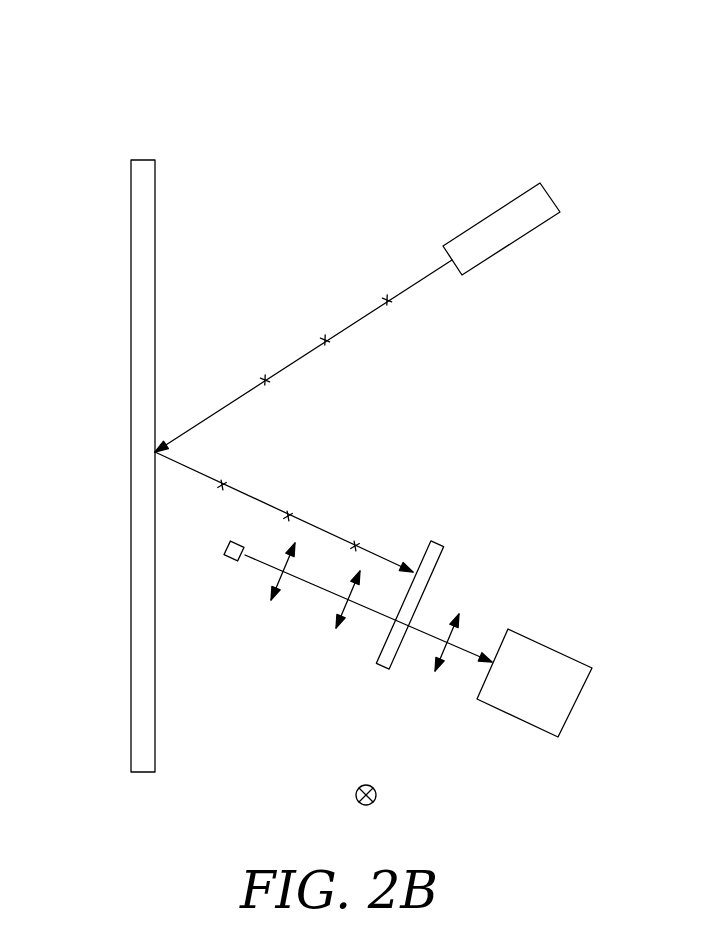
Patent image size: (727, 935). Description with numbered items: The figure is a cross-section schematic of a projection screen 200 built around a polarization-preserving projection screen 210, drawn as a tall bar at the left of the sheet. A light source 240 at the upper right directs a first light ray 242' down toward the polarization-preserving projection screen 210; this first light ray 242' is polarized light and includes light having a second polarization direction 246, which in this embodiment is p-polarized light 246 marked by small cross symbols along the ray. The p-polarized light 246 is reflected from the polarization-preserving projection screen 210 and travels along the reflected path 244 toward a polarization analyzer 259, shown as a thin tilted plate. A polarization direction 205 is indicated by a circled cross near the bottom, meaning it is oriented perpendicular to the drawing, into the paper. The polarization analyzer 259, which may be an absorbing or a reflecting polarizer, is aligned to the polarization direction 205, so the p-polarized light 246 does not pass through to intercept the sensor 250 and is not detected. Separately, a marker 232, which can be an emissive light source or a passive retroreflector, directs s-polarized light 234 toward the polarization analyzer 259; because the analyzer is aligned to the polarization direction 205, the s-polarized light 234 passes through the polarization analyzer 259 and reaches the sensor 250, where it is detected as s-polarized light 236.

The projection screen 200 is at (160, 58).
The polarization direction 205 is at (355, 793).
The polarization-preserving projection screen 210 is at (143, 160).
The marker 232 is at (228, 562).
The s-polarized light 234 is at (283, 582).
The s-polarized light 236 is at (457, 657).
The light source 240 is at (523, 235).
The first light ray 242' is at (303, 332).
The reflected light beam 244 is at (284, 512).
The second polarization direction 246 is at (267, 377).
The sensor 250 is at (550, 647).
The polarization analyzer 259 is at (427, 550).